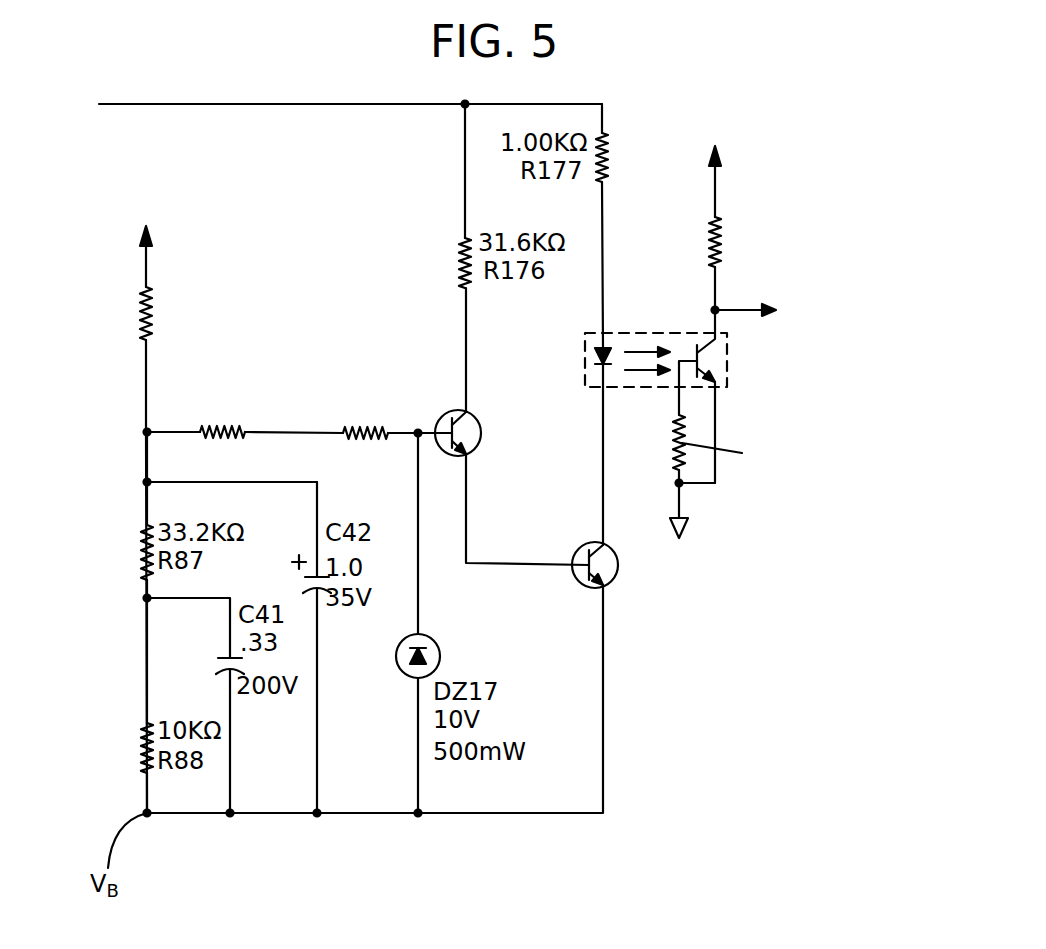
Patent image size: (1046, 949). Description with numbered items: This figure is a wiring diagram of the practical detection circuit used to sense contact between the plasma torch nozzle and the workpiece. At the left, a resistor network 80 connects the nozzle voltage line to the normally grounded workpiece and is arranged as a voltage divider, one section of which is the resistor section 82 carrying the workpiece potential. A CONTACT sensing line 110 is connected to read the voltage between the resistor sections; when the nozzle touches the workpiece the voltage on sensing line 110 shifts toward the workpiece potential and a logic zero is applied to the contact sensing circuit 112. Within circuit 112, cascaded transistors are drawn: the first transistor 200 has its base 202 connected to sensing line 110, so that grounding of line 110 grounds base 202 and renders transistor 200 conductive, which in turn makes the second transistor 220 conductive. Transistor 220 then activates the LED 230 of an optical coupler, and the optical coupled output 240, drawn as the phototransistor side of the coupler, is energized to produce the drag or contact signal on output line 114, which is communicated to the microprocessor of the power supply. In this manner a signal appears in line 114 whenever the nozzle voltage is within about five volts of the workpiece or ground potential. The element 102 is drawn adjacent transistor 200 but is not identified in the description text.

The resistor network 80 is at (143, 455).
The resistor section 82 is at (145, 312).
The CONTACT sensing line 110 is at (303, 432).
The transistor Q16 circuit 102 is at (481, 433).
The transistor 200 is at (455, 412).
The base of transistor 202 is at (436, 440).
The LED 230 is at (607, 352).
The optical coupled output 240 is at (707, 360).
The transistor 220 is at (620, 560).
The contact sensing circuit 112 is at (628, 737).
The output line 114 is at (742, 308).